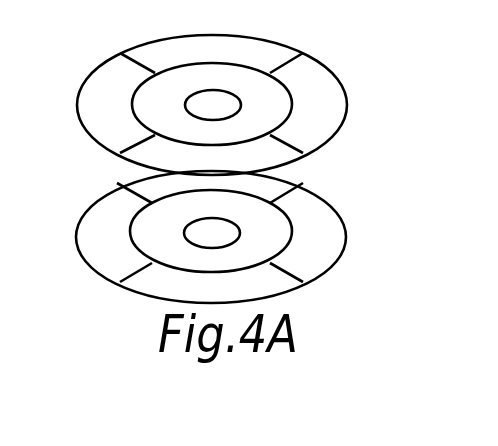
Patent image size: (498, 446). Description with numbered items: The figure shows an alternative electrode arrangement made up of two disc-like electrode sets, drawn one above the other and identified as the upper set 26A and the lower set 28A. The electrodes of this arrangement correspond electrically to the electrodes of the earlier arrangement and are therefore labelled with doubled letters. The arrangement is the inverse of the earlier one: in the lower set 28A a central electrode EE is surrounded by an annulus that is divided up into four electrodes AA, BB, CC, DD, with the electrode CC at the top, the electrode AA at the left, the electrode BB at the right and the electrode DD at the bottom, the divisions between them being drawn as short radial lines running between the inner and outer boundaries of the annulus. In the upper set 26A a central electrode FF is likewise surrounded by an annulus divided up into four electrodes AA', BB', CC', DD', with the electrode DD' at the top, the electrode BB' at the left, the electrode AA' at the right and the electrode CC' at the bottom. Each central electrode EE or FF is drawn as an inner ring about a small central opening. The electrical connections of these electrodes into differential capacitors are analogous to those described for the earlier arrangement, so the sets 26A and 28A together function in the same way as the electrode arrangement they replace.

The upper segmented disk 26A is at (247, 105).
The lower segmented disk 28A is at (246, 237).
The electrode AA is at (122, 252).
The electrode BB is at (302, 215).
The electrode CC is at (148, 187).
The electrode DD is at (250, 282).
The electrode EE is at (211, 231).
The electrode FF is at (212, 104).
The electrode AA' is at (304, 85).
The electrode BB' is at (123, 122).
The electrode CC' is at (250, 154).
The electrode DD' is at (179, 55).